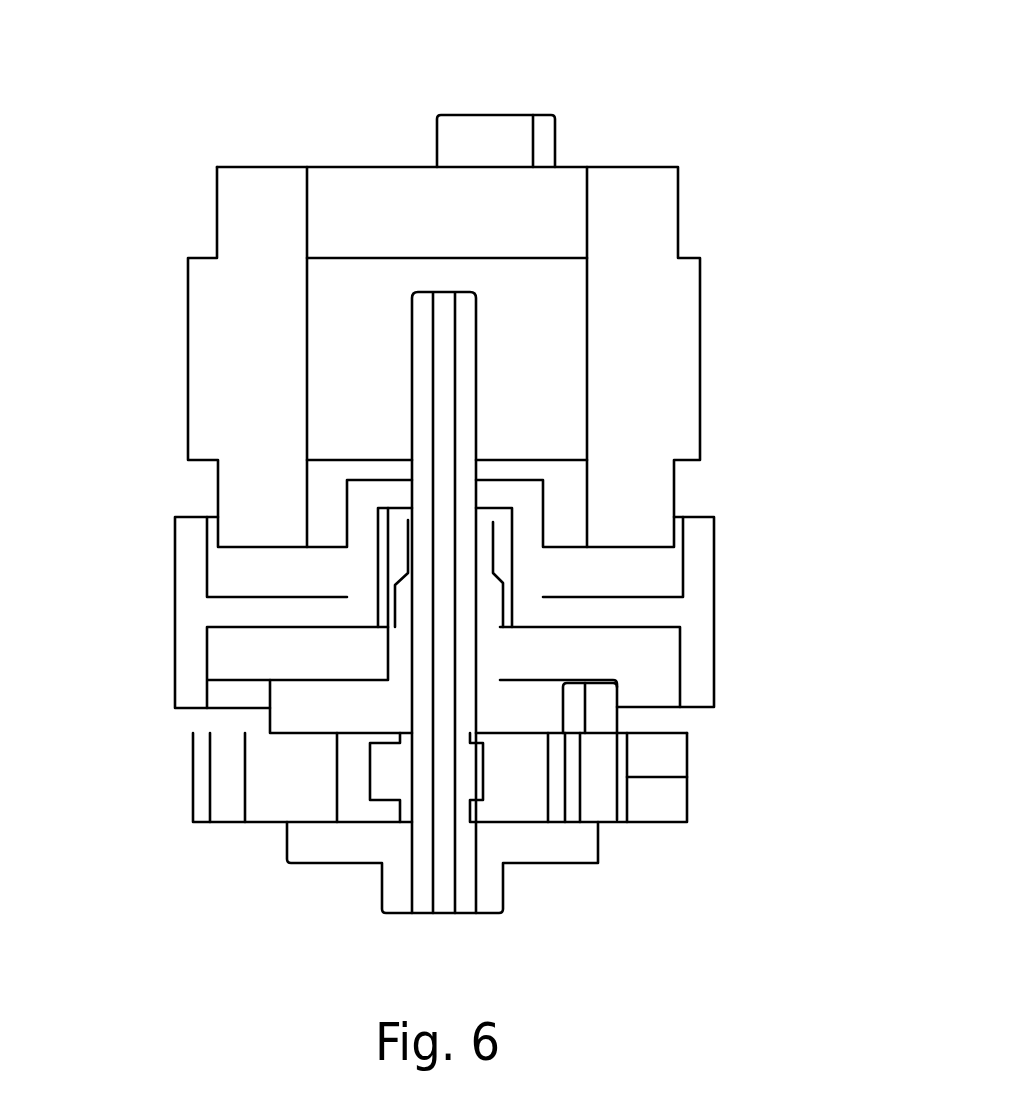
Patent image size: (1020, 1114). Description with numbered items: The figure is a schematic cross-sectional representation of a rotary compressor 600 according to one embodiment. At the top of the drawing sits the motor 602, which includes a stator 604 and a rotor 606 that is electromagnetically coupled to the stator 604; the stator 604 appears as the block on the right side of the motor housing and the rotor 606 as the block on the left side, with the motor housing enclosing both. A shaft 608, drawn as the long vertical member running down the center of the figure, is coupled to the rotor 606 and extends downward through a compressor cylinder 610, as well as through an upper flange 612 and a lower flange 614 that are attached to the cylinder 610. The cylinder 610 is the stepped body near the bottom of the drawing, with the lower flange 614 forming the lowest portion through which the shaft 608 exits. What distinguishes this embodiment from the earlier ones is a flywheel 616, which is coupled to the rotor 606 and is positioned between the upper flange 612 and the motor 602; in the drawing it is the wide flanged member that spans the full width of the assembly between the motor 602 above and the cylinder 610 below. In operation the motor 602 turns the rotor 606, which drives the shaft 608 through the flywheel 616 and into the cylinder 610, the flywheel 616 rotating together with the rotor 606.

The rotary compressor 600 is at (706, 110).
The motor 602 is at (722, 331).
The stator 604 is at (620, 408).
The rotor 606 is at (358, 407).
The shaft 608 is at (423, 360).
The compressor cylinder 610 is at (313, 770).
The upper flange 612 is at (388, 710).
The lower flange 614 is at (343, 845).
The flywheel 616 is at (695, 620).